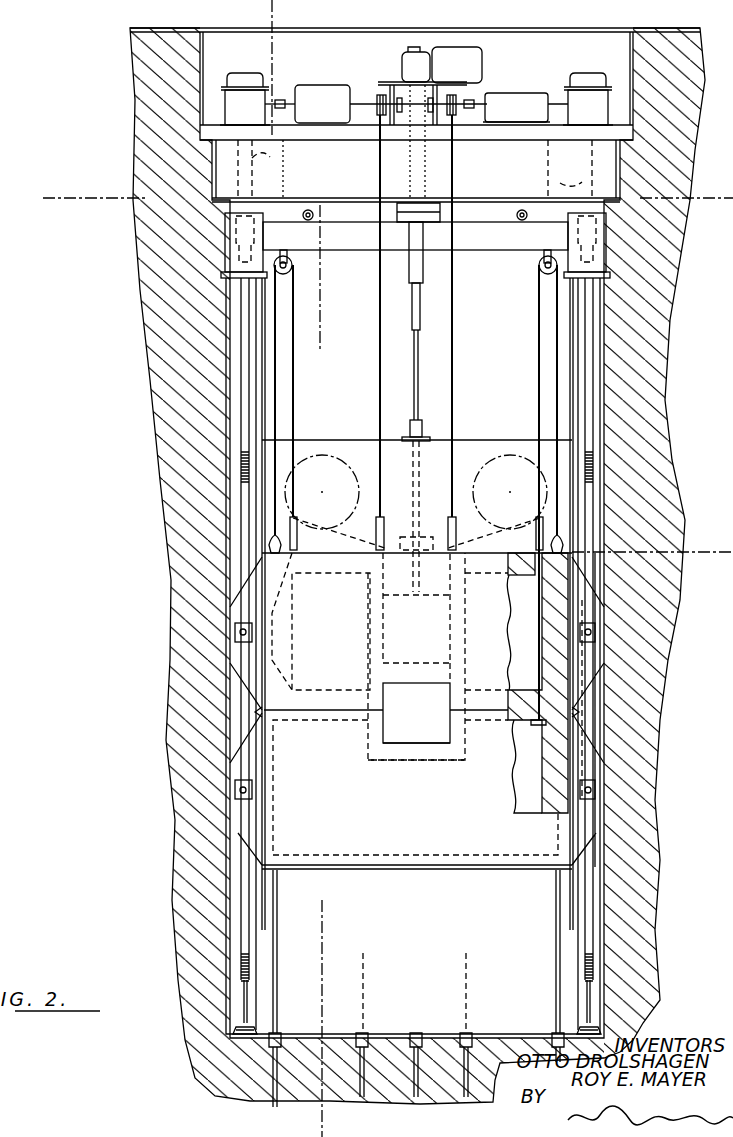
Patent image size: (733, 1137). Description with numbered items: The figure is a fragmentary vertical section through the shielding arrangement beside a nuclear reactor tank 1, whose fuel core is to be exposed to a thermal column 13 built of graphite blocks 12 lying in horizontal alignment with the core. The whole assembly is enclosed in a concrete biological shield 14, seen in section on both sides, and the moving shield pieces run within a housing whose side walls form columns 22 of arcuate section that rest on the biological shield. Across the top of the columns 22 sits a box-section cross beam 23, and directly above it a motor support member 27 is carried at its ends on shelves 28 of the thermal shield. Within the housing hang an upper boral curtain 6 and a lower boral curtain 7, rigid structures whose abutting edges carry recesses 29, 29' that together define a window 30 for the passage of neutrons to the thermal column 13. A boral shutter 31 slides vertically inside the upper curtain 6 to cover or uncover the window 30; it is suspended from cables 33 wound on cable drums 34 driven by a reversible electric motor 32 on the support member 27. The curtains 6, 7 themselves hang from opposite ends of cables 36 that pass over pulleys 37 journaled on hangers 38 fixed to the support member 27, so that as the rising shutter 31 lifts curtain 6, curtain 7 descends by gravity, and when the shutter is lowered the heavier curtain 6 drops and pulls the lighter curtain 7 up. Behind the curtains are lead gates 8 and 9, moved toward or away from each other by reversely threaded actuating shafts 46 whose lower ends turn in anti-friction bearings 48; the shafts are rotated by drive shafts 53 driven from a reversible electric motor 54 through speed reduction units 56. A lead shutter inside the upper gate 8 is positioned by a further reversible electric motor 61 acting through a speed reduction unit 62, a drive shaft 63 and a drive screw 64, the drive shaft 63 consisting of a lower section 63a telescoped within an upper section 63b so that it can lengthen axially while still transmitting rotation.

The tank 1 is at (240, 13).
The upper boral curtain 6 is at (322, 617).
The lower boral curtain 7 is at (310, 788).
The upper lead gate 8 is at (97, 178).
The lower lead gate 9 is at (597, 765).
The graphite blocks 12 is at (601, 236).
The thermal column 13 is at (432, 405).
The concrete biological shield 14 is at (158, 369).
The columns 22 is at (600, 928).
The cross beam 23 is at (362, 240).
The motor support member 27 is at (482, 182).
The shelves 28 is at (216, 200).
The recess 29 is at (416, 713).
The recess 29' is at (416, 727).
The window 30 is at (418, 745).
The boral shutter 31 is at (428, 663).
The reversible electric motor 32 is at (500, 100).
The cables 33 is at (378, 360).
The cable drums 34 is at (380, 95).
The cables 36 is at (293, 387).
The pulleys 37 is at (291, 258).
The hangers 38 is at (284, 252).
The actuating shafts 46 is at (247, 907).
The anti-friction bearings 48 is at (248, 1026).
The drive shafts 53 is at (415, 170).
The reversible electric motor 54 is at (308, 92).
The speed reduction units 56 is at (245, 78).
The reversible electric motor 61 is at (470, 60).
The speed reduction unit 62 is at (406, 60).
The drive shaft 63 is at (361, 181).
The lower drive shaft section 63a is at (413, 347).
The upper drive shaft section 63b is at (415, 280).
The drive screw 64 is at (418, 496).